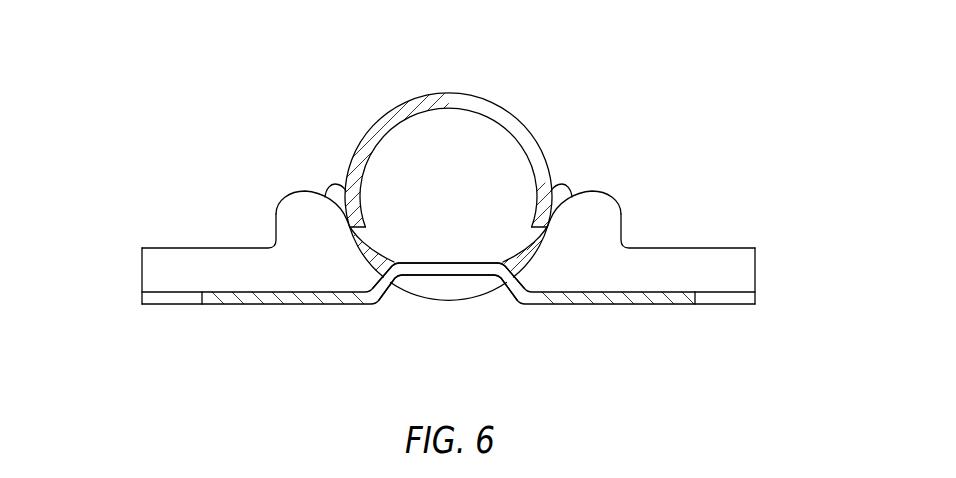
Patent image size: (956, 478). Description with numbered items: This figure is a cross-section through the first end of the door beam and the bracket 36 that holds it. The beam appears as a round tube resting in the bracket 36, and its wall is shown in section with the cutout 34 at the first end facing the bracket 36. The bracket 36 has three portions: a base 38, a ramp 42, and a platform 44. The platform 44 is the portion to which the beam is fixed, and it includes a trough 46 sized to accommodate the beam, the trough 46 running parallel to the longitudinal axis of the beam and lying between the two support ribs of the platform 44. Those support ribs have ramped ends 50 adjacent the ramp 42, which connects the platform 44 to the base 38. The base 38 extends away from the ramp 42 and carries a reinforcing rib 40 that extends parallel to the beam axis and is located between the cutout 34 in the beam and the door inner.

The cutout 34 is at (358, 234).
The bracket 36 is at (437, 87).
The base 38 is at (292, 287).
The reinforcing rib 40 is at (459, 262).
The ramp 42 is at (252, 267).
The platform 44 is at (192, 243).
The trough 46 is at (440, 301).
The ramped ends 50 is at (308, 217).